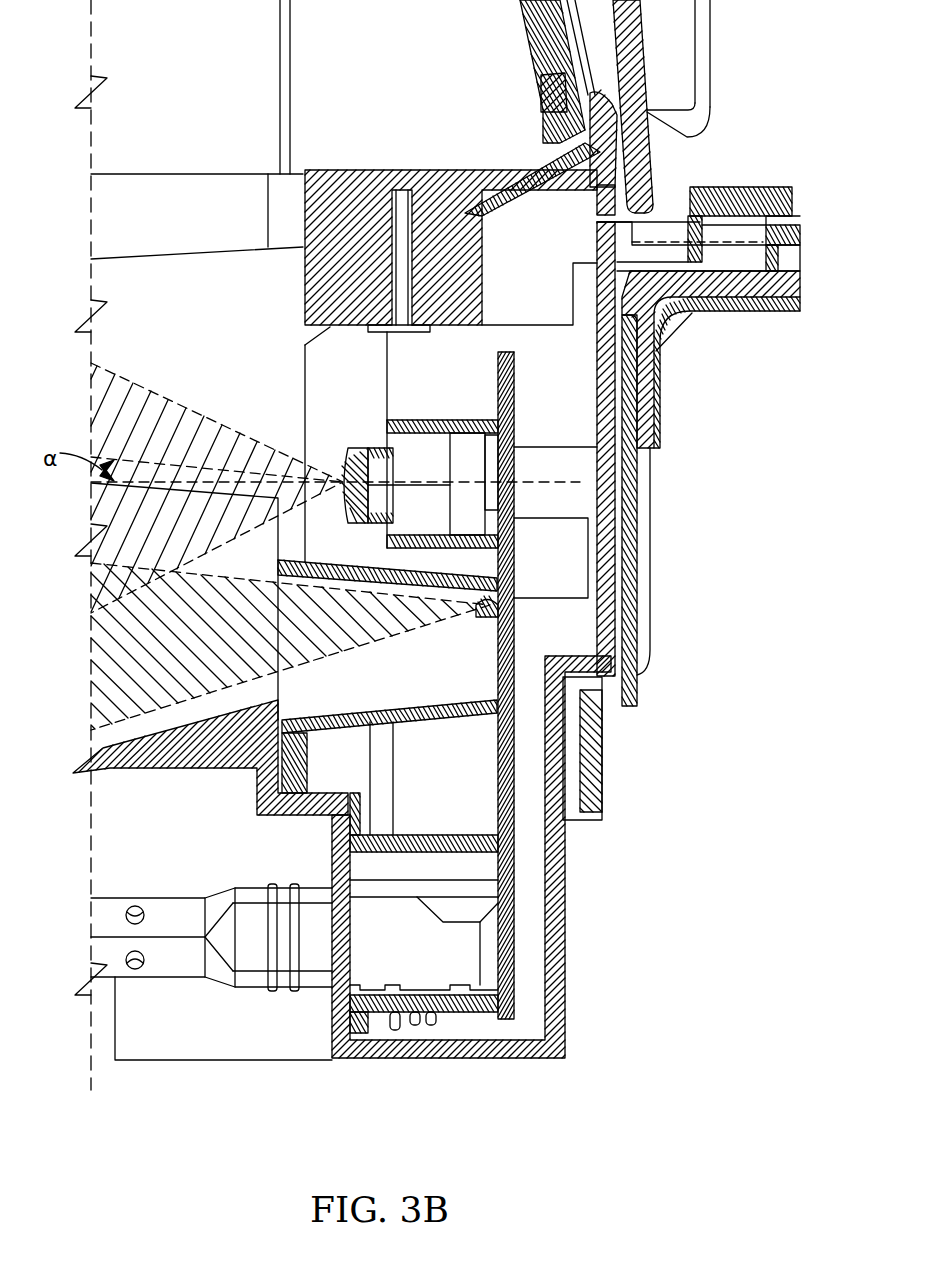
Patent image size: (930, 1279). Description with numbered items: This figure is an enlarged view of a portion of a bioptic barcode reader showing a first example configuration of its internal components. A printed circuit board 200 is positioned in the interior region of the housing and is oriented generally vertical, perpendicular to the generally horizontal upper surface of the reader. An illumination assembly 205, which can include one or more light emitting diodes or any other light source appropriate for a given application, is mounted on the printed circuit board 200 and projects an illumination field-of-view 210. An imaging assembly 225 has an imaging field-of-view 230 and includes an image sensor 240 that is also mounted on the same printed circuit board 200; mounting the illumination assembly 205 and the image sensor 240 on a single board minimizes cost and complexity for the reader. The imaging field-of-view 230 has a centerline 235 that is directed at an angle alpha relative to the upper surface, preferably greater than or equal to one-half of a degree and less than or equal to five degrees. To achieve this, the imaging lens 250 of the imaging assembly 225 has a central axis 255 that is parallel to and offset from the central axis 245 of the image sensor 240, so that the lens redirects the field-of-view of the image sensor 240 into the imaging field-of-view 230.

The printed circuit board 200 is at (505, 863).
The illumination assembly 205 is at (474, 626).
The illumination field-of-view 210 is at (312, 665).
The imaging assembly 225 is at (440, 408).
The imaging field-of-view 230 is at (157, 393).
The centerline 235 is at (136, 461).
The image sensor 240 is at (480, 500).
The central axis of image sensor 245 is at (560, 447).
The imaging lens 250 is at (357, 448).
The central axis of imaging lens 255 is at (186, 486).